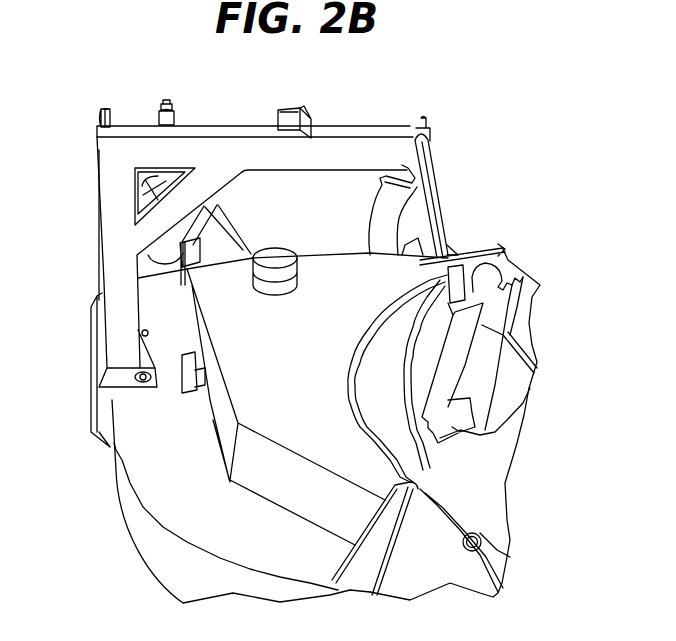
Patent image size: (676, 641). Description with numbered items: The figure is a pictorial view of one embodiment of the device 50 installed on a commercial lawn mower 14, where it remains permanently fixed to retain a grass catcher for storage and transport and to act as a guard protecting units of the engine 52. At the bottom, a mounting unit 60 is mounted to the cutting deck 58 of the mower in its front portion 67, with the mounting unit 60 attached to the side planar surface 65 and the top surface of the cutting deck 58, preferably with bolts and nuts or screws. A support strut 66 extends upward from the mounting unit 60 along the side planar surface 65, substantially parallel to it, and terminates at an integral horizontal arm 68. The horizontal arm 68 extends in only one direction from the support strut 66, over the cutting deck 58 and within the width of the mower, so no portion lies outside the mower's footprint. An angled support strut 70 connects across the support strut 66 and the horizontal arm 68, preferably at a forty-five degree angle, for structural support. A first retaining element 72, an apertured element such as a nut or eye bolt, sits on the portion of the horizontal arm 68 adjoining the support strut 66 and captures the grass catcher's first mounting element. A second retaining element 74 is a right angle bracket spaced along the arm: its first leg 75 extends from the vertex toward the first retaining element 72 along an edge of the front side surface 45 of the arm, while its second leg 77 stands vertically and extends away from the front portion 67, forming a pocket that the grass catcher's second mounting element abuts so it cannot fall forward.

The lawn mower 14 is at (450, 196).
The front side surface 45 is at (144, 124).
The device 50 is at (113, 108).
The engine 52 is at (528, 293).
The cutting deck 58 is at (167, 515).
The mounting unit 60 is at (95, 340).
The side planar surface 65 is at (123, 490).
The support strut 66 is at (121, 216).
The front portion 67 is at (91, 273).
The horizontal arm 68 is at (365, 133).
The angled support strut 70 is at (150, 190).
The first retaining element 72 is at (98, 122).
The second retaining element 74 is at (292, 110).
The first leg 75 is at (278, 117).
The second leg 77 is at (312, 118).